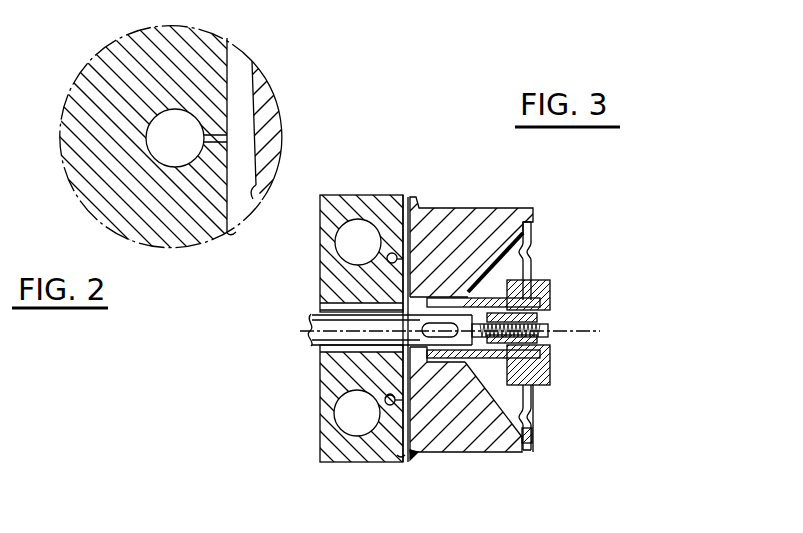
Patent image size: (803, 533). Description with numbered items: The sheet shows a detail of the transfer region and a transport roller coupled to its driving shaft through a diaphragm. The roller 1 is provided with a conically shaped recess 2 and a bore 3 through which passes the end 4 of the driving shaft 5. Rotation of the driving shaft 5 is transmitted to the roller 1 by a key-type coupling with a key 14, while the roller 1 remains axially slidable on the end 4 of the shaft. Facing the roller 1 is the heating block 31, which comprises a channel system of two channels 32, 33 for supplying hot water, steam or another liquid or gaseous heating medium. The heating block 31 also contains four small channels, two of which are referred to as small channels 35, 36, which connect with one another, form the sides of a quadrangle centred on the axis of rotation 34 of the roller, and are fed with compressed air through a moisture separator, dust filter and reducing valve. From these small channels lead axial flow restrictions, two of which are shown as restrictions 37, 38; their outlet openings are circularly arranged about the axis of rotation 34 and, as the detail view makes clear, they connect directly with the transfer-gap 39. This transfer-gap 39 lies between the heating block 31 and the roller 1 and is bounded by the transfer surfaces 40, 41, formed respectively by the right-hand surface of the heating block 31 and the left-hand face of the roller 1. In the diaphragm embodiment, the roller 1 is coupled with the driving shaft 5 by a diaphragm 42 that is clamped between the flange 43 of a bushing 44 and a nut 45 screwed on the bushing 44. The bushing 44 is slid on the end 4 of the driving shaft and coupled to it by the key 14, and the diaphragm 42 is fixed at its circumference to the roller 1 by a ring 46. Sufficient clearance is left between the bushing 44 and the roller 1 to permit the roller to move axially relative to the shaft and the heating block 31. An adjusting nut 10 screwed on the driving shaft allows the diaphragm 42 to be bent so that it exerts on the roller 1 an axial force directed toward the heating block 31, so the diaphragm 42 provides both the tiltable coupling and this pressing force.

In FIG. 2, the roller 1 is at (272, 122).
In FIG. 3, the roller 1 is at (490, 428).
In FIG. 3, the conically shaped recess 2 is at (506, 400).
In FIG. 3, the bore 3 is at (417, 353).
In FIG. 3, the end of driving shaft 4 is at (443, 327).
In FIG. 3, the driving shaft 5 is at (312, 333).
In FIG. 3, the adjusting nut 10 is at (551, 352).
In FIG. 3, the key 14 is at (452, 318).
In FIG. 2, the heating block 31 is at (91, 77).
In FIG. 3, the heating block 31 is at (327, 203).
In FIG. 3, the channel 32 is at (366, 230).
In FIG. 3, the channel 33 is at (352, 425).
In FIG. 3, the axis of rotation 34 is at (598, 331).
In FIG. 2, the small channel 35 is at (163, 152).
In FIG. 3, the small channel 35 is at (392, 258).
In FIG. 3, the small channel 36 is at (392, 401).
In FIG. 2, the axial flow restriction 37 is at (214, 142).
In FIG. 3, the axial flow restriction 37 is at (402, 265).
In FIG. 3, the axial flow restriction 38 is at (393, 398).
In FIG. 2, the transfer-gap 39 is at (240, 72).
In FIG. 3, the transfer-gap 39 is at (408, 186).
In FIG. 2, the transfer surface 40 is at (234, 232).
In FIG. 3, the transfer surface 40 is at (398, 456).
In FIG. 2, the transfer surface 41 is at (253, 195).
In FIG. 3, the transfer surface 41 is at (410, 456).
In FIG. 3, the diaphragm 42 is at (534, 248).
In FIG. 3, the flange 43 is at (551, 299).
In FIG. 3, the bushing 44 is at (500, 268).
In FIG. 3, the nut 45 is at (533, 268).
In FIG. 3, the ring 46 is at (533, 438).